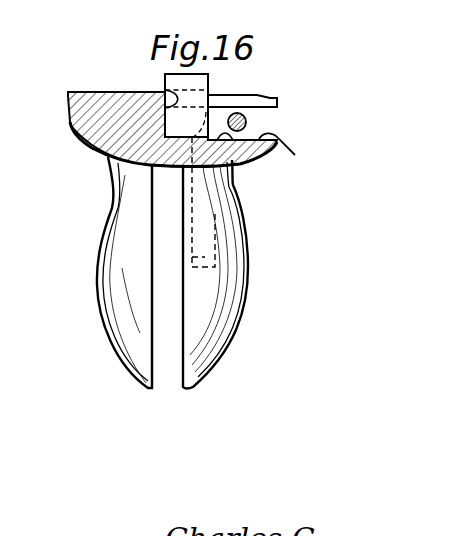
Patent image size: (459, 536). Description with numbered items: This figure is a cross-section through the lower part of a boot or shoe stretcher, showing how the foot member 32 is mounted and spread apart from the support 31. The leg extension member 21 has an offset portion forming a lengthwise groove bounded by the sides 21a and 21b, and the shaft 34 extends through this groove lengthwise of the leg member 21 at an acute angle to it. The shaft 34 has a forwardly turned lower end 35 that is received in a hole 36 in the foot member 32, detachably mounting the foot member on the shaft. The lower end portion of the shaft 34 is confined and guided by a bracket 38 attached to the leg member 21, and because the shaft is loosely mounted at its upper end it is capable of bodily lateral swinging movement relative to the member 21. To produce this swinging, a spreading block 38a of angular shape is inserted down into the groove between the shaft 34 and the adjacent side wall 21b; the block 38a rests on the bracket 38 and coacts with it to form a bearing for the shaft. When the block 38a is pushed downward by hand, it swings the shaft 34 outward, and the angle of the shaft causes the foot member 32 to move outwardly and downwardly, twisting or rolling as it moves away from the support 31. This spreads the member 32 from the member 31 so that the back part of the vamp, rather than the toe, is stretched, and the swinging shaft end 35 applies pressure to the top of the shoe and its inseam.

The leg extension member 21 is at (87, 135).
The groove side 21a is at (304, 154).
The groove side wall 21b is at (165, 92).
The support 31 is at (103, 255).
The foot member 32 is at (232, 313).
The shaft 34 is at (247, 120).
The forwardly turned lower end 35 is at (210, 217).
The hole 36 is at (215, 267).
The bracket 38 is at (277, 98).
The spreading block 38a is at (208, 78).